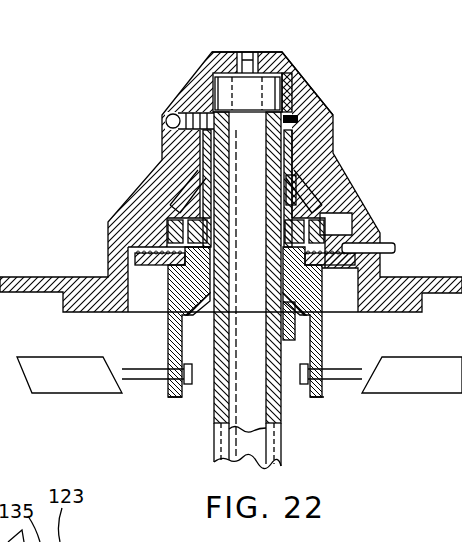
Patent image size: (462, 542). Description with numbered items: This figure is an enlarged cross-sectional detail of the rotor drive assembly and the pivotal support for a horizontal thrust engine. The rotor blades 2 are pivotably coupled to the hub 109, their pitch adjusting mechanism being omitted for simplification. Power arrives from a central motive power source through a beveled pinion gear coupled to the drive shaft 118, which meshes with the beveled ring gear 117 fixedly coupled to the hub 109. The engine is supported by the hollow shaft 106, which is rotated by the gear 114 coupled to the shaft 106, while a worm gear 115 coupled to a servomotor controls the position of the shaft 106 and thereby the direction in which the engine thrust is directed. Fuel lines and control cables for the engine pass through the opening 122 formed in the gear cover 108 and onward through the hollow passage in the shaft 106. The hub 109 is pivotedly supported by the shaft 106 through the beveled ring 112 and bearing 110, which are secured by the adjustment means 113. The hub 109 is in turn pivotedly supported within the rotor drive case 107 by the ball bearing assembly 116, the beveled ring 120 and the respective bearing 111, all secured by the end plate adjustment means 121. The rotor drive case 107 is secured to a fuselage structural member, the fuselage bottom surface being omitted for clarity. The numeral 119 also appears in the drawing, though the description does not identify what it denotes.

The rotor blades 2 is at (58, 393).
The hollow shaft 106 is at (282, 448).
The rotor drive case 107 is at (370, 227).
The gear cover 108 is at (282, 72).
The hub 109 is at (322, 355).
The bearing 110 is at (302, 318).
The bearing 111 is at (172, 183).
The beveled ring 112 is at (200, 322).
The adjustment means 113 is at (200, 398).
The gear 114 is at (313, 97).
The worm gear 115 is at (173, 115).
The ball bearing assembly 116 is at (310, 213).
The beveled ring gear 117 is at (145, 268).
The drive shaft 118 is at (392, 252).
The spring 119 is at (210, 110).
The beveled ring 120 is at (308, 188).
The end plate adjustment means 121 is at (300, 183).
The opening 122 is at (252, 52).